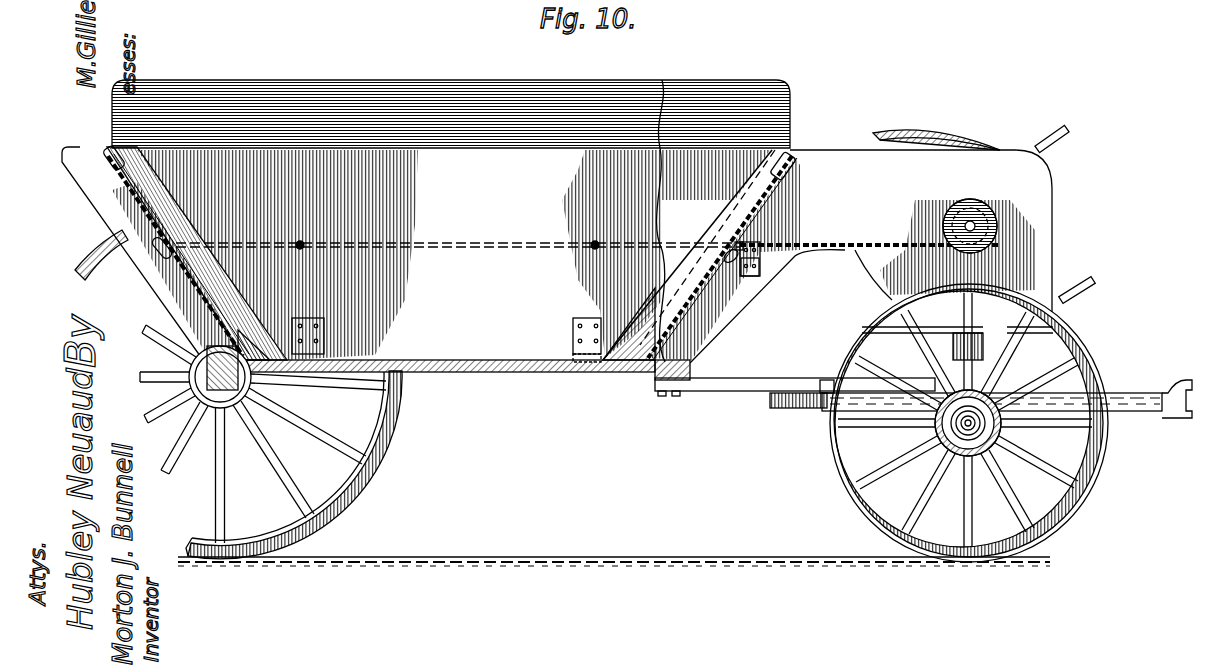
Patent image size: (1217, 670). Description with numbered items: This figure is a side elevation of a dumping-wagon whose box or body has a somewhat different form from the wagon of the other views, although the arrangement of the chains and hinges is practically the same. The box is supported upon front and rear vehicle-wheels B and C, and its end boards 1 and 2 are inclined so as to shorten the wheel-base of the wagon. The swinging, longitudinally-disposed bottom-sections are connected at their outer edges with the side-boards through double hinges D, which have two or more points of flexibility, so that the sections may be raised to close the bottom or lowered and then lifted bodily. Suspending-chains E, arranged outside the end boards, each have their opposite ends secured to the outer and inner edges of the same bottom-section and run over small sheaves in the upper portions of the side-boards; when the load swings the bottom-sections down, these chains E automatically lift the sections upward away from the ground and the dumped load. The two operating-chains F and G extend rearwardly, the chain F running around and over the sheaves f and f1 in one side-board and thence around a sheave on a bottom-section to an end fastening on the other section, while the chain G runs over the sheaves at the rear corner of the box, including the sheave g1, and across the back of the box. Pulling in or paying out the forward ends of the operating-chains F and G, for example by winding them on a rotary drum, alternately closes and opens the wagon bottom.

The end board 1 is at (157, 193).
The end board 2 is at (735, 190).
The front vehicle-wheel B is at (843, 460).
The rear vehicle-wheel C is at (395, 432).
The double hinge D is at (578, 368).
The suspending-chain E is at (195, 224).
The operating-chain F is at (853, 248).
The sheave f is at (768, 240).
The sheave f1 is at (760, 270).
The operating-chain G is at (462, 243).
The sheave g1 is at (160, 264).